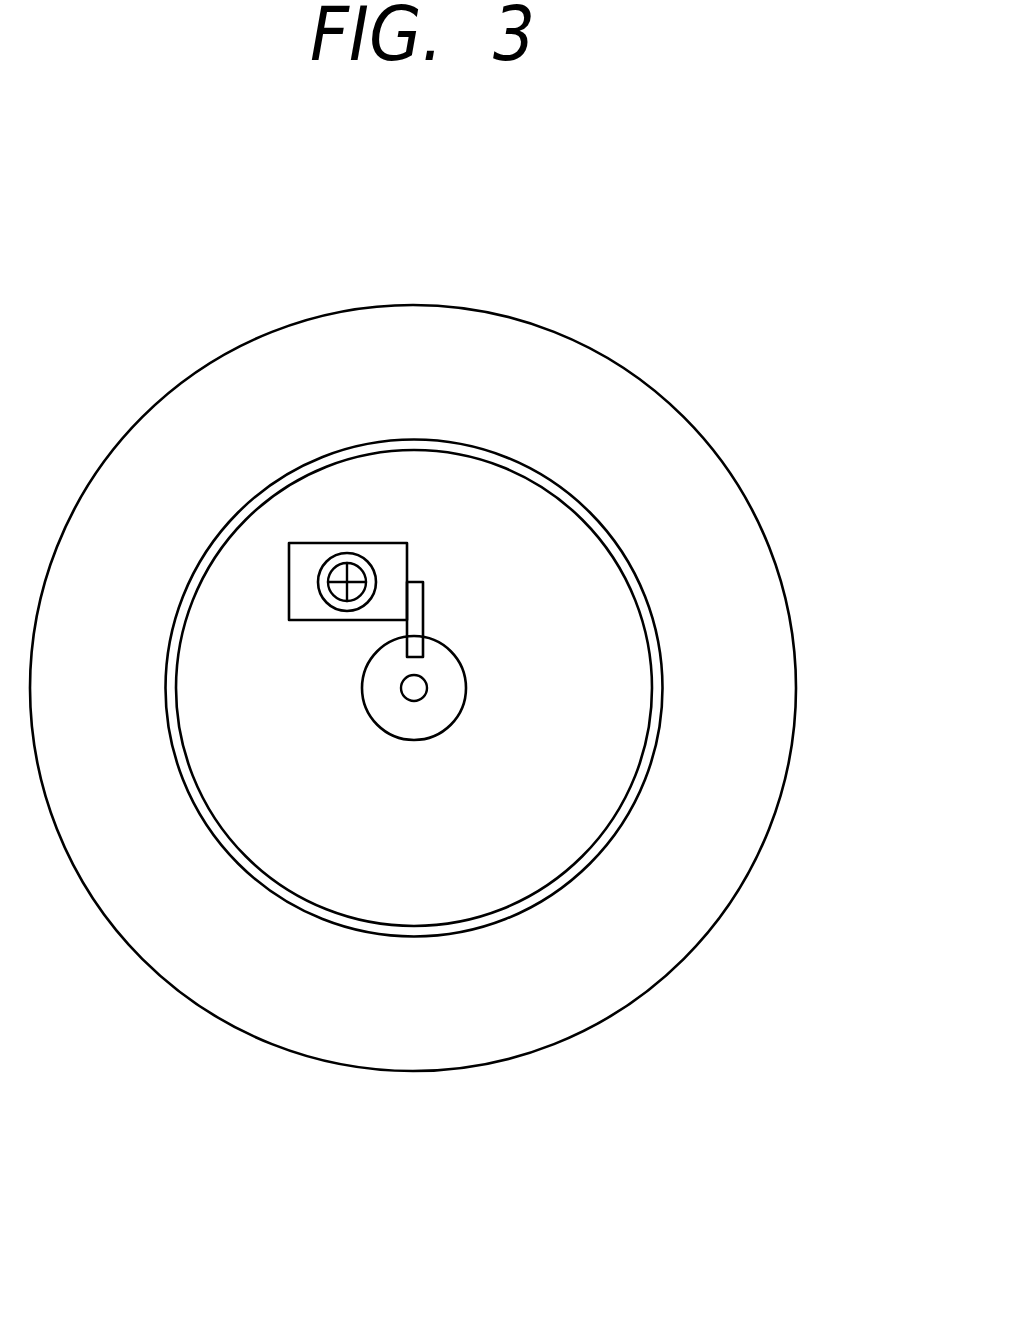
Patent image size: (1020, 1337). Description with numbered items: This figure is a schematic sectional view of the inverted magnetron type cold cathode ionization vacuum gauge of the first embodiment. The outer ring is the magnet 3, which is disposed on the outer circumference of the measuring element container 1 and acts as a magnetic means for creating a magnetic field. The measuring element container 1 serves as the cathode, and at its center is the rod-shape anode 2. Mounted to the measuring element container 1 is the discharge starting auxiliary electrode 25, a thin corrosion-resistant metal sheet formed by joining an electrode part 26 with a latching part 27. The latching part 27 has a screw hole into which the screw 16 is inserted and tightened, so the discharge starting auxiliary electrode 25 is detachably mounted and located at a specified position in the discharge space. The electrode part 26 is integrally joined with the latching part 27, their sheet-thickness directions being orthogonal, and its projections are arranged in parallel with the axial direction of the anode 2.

The measuring element container 1 is at (596, 858).
The anode 2 is at (428, 696).
The magnet 3 is at (138, 955).
The screw 16 is at (333, 557).
The discharge starting auxiliary electrode 25 is at (427, 418).
The electrode part 26 is at (417, 590).
The latching part 27 is at (390, 556).